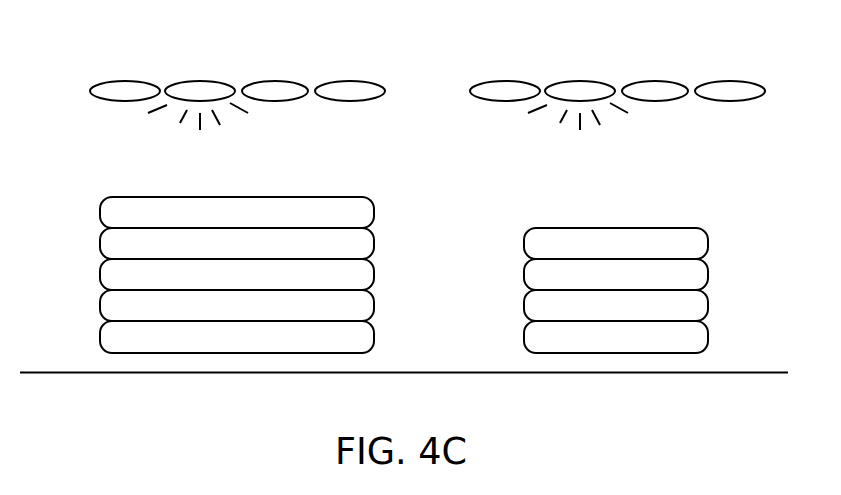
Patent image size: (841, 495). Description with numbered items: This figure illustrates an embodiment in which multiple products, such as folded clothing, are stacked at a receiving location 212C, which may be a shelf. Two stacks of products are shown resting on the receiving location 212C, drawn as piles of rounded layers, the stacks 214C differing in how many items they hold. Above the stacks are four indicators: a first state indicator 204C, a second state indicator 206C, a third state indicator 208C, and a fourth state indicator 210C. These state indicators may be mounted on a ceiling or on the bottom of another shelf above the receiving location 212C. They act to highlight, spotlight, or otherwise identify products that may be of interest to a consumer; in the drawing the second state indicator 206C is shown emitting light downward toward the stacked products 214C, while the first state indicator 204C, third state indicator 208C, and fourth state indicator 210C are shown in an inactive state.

The first state indicator 204C is at (113, 81).
The second state indicator 206C is at (197, 81).
The third state indicator 208C is at (275, 81).
The fourth state indicator 210C is at (363, 81).
The receiving location 212C is at (238, 389).
The stacked printed layers 214C is at (100, 214).